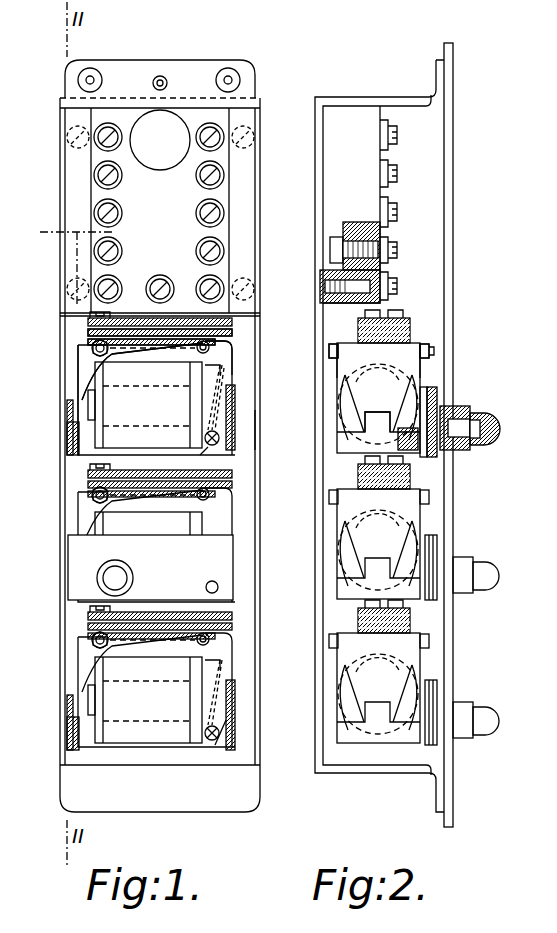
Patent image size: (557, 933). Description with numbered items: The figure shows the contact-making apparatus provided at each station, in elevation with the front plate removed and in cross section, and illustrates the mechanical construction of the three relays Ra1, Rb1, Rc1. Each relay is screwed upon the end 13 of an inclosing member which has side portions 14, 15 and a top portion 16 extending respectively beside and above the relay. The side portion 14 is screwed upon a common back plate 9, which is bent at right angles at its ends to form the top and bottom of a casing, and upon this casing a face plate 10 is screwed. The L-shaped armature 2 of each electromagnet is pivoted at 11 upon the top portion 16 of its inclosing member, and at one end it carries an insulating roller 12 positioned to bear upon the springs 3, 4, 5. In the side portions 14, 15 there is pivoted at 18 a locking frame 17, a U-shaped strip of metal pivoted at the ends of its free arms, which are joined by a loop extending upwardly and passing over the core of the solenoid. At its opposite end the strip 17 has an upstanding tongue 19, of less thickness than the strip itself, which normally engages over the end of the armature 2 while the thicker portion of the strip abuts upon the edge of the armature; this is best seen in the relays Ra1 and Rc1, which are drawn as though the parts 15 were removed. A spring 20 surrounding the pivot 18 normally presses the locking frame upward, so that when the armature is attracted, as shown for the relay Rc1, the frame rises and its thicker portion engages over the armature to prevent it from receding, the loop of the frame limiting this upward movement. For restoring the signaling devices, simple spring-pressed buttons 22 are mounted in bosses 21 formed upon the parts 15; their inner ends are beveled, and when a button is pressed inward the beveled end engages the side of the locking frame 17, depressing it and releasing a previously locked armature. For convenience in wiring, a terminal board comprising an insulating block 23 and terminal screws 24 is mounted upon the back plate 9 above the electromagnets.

In FIG. 1, the L-shaped armature 2 is at (78, 362).
In FIG. 2, the L-shaped armature 2 is at (418, 365).
In FIG. 1, the spring 3 is at (215, 341).
In FIG. 1, the spring 4 is at (232, 332).
In FIG. 1, the spring 5 is at (232, 322).
In FIG. 2, the back plate 9 is at (323, 330).
In FIG. 2, the face plate 10 is at (453, 218).
In FIG. 1, the pivot 11 is at (92, 350).
In FIG. 2, the pivot 11 is at (432, 345).
In FIG. 1, the insulating roller 12 is at (215, 344).
In FIG. 2, the insulating roller 12 is at (325, 345).
In FIG. 1, the end of inclosing member 13 is at (236, 388).
In FIG. 1, the side portion 14 is at (259, 432).
In FIG. 1, the side portion 15 is at (215, 560).
In FIG. 2, the side portion 15 is at (437, 396).
In FIG. 1, the top portion 16 is at (232, 358).
In FIG. 1, the locking frame 17 is at (70, 430).
In FIG. 2, the locking frame 17 is at (428, 456).
In FIG. 1, the pivot 18 is at (212, 447).
In FIG. 1, the upstanding tongue 19 is at (68, 414).
In FIG. 2, the upstanding tongue 19 is at (378, 418).
In FIG. 1, the spring 20 is at (222, 440).
In FIG. 2, the spring 20 is at (412, 448).
In FIG. 1, the boss 21 is at (124, 566).
In FIG. 2, the boss 21 is at (462, 449).
In FIG. 1, the press button 22 is at (120, 578).
In FIG. 2, the press button 22 is at (497, 432).
In FIG. 2, the insulating block 23 is at (351, 204).
In FIG. 2, the terminal screws 24 is at (397, 136).
In FIG. 1, the relay Ra1 is at (145, 405).
In FIG. 2, the relay Ra1 is at (417, 388).
In FIG. 1, the relay Rb1 is at (156, 533).
In FIG. 2, the relay Rb1 is at (410, 530).
In FIG. 1, the relay Rc1 is at (156, 676).
In FIG. 2, the relay Rc1 is at (414, 671).